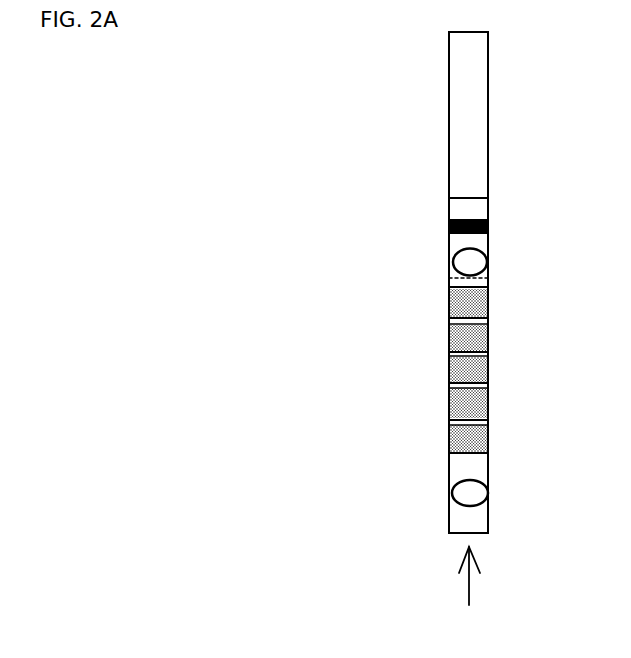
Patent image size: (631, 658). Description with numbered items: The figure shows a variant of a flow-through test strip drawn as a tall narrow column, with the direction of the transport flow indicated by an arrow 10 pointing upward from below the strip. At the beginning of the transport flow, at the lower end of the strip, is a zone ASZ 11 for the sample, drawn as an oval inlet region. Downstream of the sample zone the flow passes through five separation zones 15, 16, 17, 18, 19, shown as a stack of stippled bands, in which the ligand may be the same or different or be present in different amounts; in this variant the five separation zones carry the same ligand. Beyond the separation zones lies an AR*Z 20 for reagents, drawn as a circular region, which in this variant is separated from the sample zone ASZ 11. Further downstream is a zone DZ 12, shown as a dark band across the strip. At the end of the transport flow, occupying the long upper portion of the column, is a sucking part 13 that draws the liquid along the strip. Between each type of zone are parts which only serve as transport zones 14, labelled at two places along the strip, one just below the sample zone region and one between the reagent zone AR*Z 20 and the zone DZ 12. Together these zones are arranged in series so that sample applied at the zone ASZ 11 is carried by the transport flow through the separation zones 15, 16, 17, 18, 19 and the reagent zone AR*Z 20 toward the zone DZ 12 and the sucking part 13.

The arrow 10 is at (491, 578).
The sample application zone ASZ 11 is at (498, 488).
The detection zone DZ 12 is at (492, 227).
The sucking part 13 is at (490, 124).
The transport zones 14 is at (448, 243).
The first separation zone 15 is at (492, 436).
The second separation zone 16 is at (492, 403).
The third separation zone 17 is at (492, 370).
The fourth separation zone 18 is at (492, 336).
The fifth separation zone 19 is at (492, 301).
The reagent zone AR*Z 20 is at (492, 263).